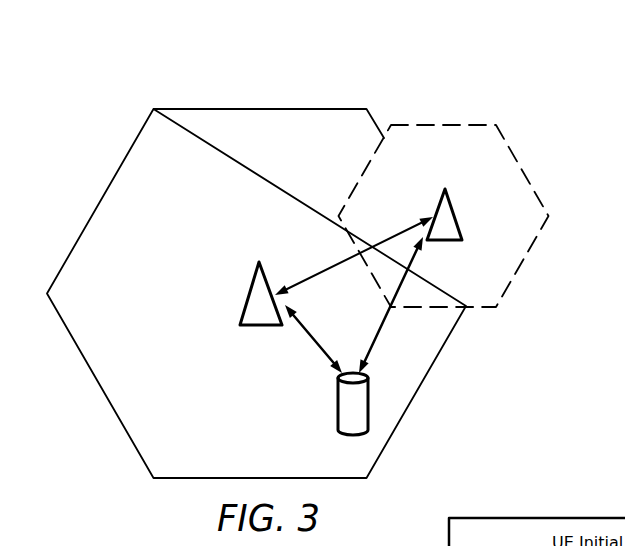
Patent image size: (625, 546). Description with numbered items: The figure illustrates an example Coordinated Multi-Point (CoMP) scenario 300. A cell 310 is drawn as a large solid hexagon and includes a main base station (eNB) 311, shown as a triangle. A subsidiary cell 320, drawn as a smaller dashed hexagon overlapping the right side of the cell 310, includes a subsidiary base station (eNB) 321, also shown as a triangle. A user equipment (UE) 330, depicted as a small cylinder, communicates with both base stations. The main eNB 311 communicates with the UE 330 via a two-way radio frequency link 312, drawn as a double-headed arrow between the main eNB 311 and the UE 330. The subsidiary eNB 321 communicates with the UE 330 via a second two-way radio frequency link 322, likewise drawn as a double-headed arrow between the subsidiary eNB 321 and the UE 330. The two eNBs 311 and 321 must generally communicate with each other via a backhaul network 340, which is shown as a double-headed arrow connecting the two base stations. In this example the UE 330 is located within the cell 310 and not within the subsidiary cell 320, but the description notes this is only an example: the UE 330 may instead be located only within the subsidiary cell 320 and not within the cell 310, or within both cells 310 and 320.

The CoMP scenario 300 is at (200, 78).
The cell 310 is at (93, 210).
The subsidiary cell 320 is at (521, 165).
The main base station (eNB) 311 is at (249, 290).
The subsidiary base station (eNB) 321 is at (455, 215).
The backhaul network 340 is at (328, 268).
The two-way radio frequency link 312 is at (310, 340).
The two-way radio frequency link 322 is at (383, 323).
The user equipment (UE) 330 is at (336, 405).